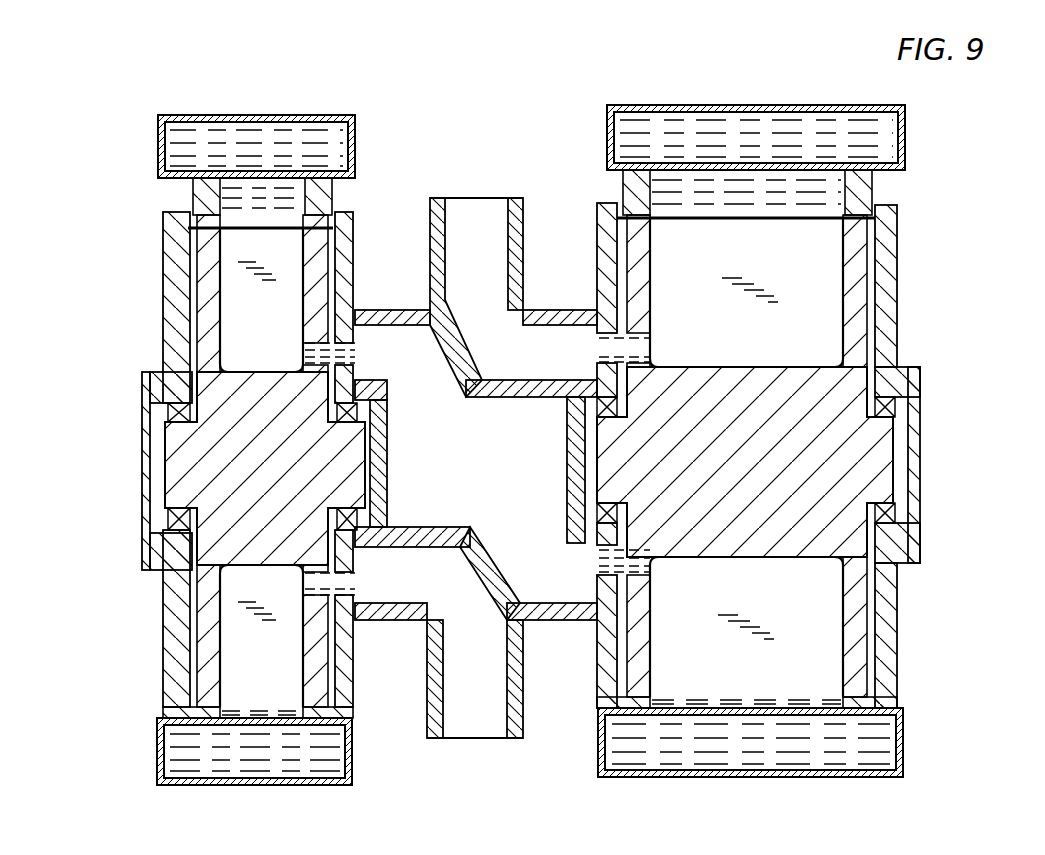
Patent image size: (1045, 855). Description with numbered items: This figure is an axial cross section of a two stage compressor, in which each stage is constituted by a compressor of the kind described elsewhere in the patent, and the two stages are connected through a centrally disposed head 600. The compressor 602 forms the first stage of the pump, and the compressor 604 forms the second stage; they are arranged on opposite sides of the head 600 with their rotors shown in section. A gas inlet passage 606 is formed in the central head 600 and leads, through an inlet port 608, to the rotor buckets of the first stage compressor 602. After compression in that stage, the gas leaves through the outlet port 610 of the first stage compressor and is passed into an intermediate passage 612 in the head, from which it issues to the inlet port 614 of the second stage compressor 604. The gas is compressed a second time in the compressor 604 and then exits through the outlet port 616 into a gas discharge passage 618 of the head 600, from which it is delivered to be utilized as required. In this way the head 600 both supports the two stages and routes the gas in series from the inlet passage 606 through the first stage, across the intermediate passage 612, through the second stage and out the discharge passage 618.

The central head 600 is at (483, 466).
The first stage compressor 602 is at (897, 214).
The second stage compressor 604 is at (345, 217).
The gas inlet passage 606 is at (473, 120).
The inlet port 608 is at (676, 350).
The outlet port 610 is at (511, 531).
The intermediate passage 612 is at (495, 479).
The inlet port 614 is at (428, 410).
The outlet port 616 is at (290, 582).
The gas discharge passage 618 is at (473, 812).